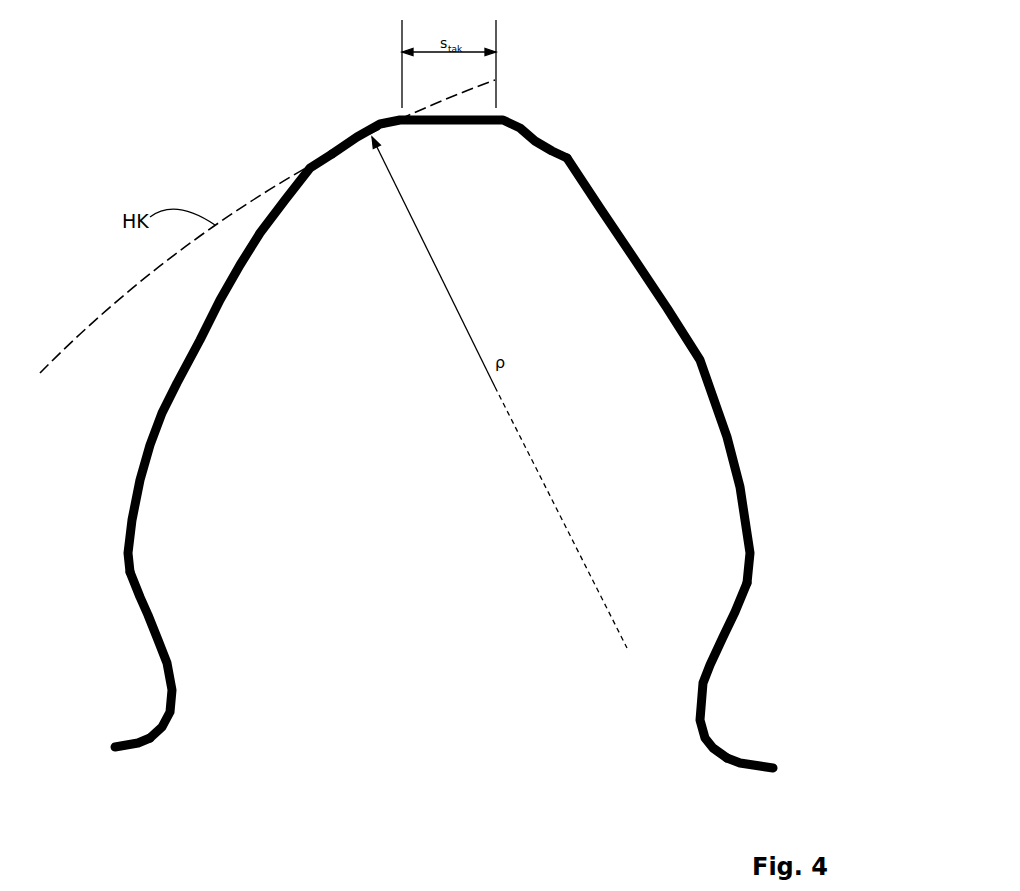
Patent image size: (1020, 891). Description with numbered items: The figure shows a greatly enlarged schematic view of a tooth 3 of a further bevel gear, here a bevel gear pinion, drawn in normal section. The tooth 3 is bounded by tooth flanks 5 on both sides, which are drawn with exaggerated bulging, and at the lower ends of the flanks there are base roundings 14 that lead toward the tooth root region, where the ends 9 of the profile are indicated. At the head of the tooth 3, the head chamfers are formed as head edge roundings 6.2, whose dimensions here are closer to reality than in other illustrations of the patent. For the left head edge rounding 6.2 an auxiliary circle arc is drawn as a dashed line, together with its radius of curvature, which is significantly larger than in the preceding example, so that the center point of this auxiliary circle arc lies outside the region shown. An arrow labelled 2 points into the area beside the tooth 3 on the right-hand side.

The tooth 3 is at (172, 56).
The saw blade body 2 is at (715, 130).
The tooth flanks 5 is at (158, 407).
The head edge roundings 6.2 is at (338, 130).
The tooth root / gullet end 9 is at (133, 748).
The base roundings 14 is at (145, 675).